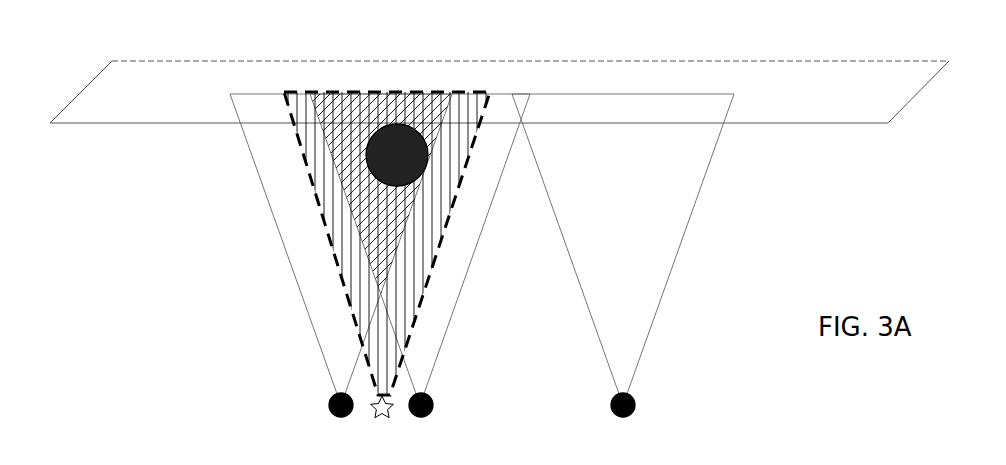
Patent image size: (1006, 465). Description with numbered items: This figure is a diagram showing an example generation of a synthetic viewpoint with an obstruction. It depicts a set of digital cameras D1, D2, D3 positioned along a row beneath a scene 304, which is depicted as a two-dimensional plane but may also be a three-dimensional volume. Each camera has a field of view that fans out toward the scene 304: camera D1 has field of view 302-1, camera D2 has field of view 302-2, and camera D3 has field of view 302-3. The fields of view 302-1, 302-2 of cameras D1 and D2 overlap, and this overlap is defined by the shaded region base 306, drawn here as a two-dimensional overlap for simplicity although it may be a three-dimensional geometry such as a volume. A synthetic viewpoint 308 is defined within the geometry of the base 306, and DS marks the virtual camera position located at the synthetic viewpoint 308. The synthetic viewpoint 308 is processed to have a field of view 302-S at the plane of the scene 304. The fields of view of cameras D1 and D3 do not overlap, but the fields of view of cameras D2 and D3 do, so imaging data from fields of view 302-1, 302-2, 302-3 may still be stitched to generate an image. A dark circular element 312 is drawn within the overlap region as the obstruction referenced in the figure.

The field of view 302-1 is at (341, 234).
The field of view 302-2 is at (420, 238).
The field of view 302-3 is at (623, 235).
The field of view 302-S is at (382, 90).
The scene 304 is at (499, 92).
The base 306 is at (353, 95).
The synthetic viewpoint 308 is at (376, 400).
The feature / inclusion 312 is at (365, 167).
The digital camera D1 is at (339, 422).
The virtual camera position DS is at (382, 440).
The digital camera D2 is at (424, 422).
The digital camera D3 is at (623, 422).